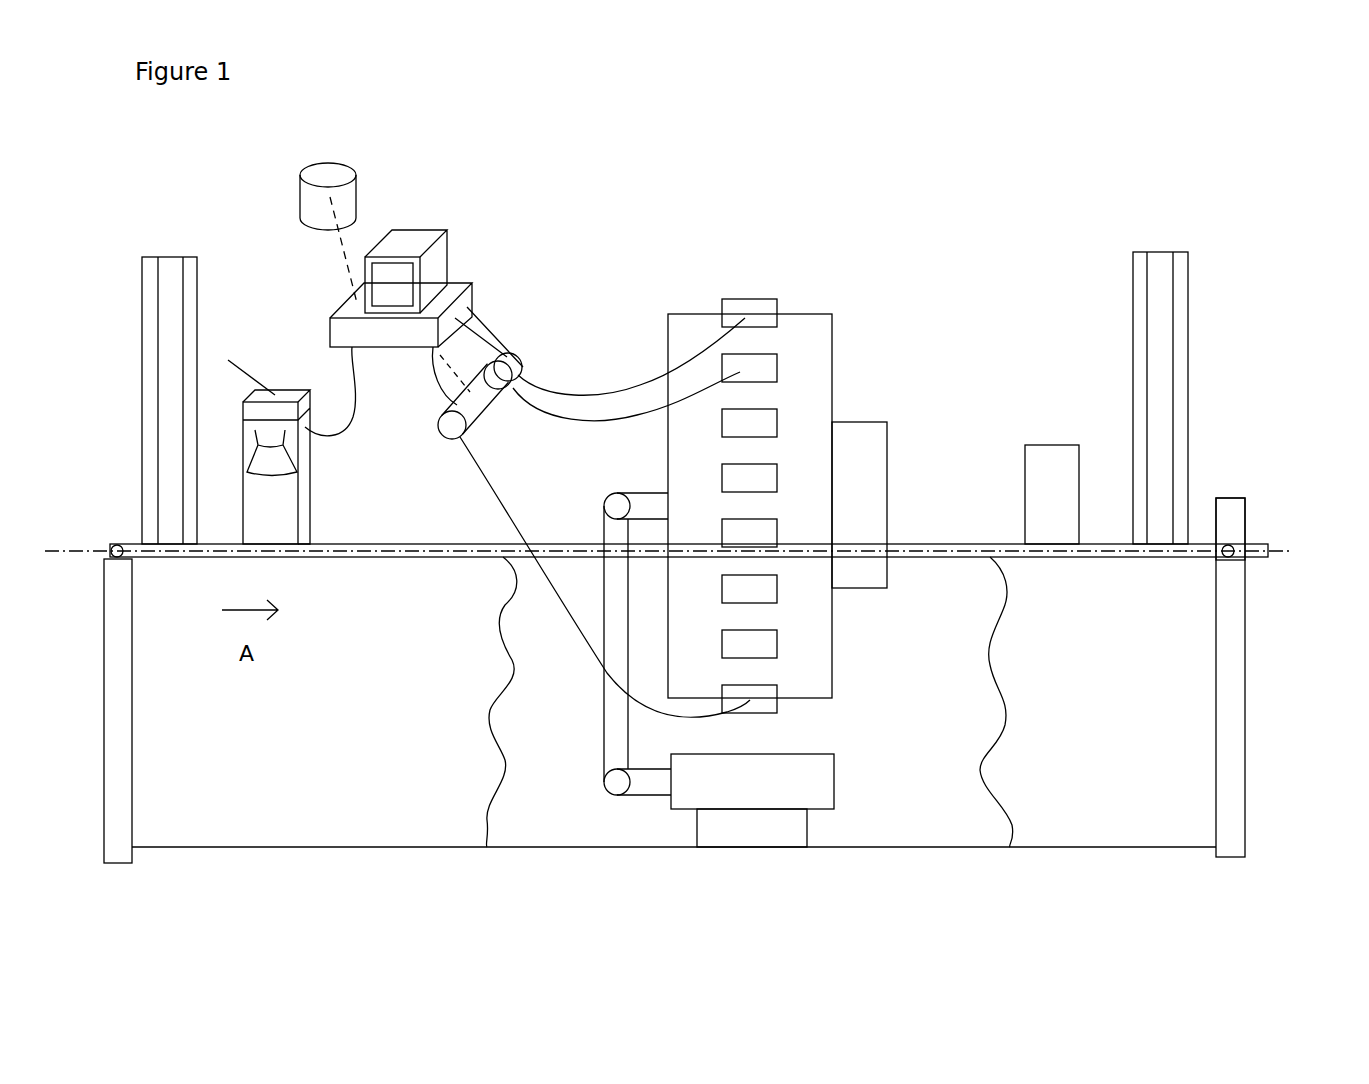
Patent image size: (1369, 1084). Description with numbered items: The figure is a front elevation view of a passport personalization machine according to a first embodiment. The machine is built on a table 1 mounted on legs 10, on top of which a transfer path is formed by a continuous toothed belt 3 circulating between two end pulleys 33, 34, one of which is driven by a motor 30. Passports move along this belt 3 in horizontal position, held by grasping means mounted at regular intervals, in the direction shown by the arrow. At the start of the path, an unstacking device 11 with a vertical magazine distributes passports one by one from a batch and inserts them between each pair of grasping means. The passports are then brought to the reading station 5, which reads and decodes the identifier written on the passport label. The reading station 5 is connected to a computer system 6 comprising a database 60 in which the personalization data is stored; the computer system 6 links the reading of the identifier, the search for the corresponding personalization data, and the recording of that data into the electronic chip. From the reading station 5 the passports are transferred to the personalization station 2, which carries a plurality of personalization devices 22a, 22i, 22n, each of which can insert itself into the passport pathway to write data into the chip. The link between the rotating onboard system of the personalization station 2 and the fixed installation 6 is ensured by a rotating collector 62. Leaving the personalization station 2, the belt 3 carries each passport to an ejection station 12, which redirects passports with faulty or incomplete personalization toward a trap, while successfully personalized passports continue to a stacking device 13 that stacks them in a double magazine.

The table 1 is at (1170, 718).
The legs 10 is at (1223, 622).
The unstacking device 11 is at (176, 285).
The ejection station 12 is at (1058, 480).
The stacking device 13 is at (1153, 312).
The personalization station 2 is at (770, 539).
The personalization device 22a is at (740, 317).
The personalization device 22i is at (752, 475).
The personalization device 22n is at (780, 696).
The continuous toothed belt 3 is at (227, 547).
The motor 30 is at (1223, 517).
The end pulley 33 is at (1233, 547).
The end pulley 34 is at (113, 546).
The reading station 5 is at (385, 359).
The computer system 6 is at (439, 254).
The database 60 is at (352, 207).
The rotating collector 62 is at (508, 355).